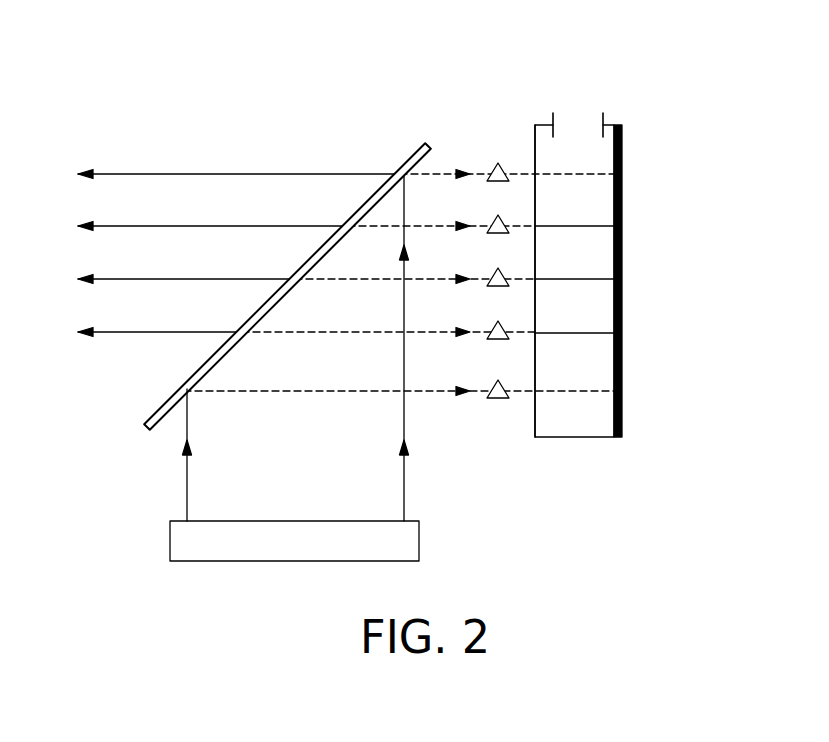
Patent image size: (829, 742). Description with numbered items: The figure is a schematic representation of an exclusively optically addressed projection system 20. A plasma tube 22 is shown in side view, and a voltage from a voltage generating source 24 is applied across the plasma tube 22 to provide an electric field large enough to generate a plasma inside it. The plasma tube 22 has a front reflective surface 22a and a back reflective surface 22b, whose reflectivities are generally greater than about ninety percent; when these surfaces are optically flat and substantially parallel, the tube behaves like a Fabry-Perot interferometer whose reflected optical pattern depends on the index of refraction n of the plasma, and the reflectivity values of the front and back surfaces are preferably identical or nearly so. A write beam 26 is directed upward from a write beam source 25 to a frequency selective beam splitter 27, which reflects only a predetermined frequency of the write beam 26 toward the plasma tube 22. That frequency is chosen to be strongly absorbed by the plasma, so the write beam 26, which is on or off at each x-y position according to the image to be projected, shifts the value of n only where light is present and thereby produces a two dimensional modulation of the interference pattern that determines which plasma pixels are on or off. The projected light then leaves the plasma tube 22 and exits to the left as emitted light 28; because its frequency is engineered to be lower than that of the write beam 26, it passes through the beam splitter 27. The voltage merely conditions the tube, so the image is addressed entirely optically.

The projection system 20 is at (85, 431).
The plasma tube 22 is at (540, 152).
The front reflective surface 22a is at (535, 260).
The back reflective surface 22b is at (620, 377).
The voltage generating source 24 is at (578, 112).
The write beam source 25 is at (419, 540).
The write beam 26 is at (404, 475).
The frequency selective beam splitter 27 is at (370, 192).
The emitted light 28 is at (141, 225).